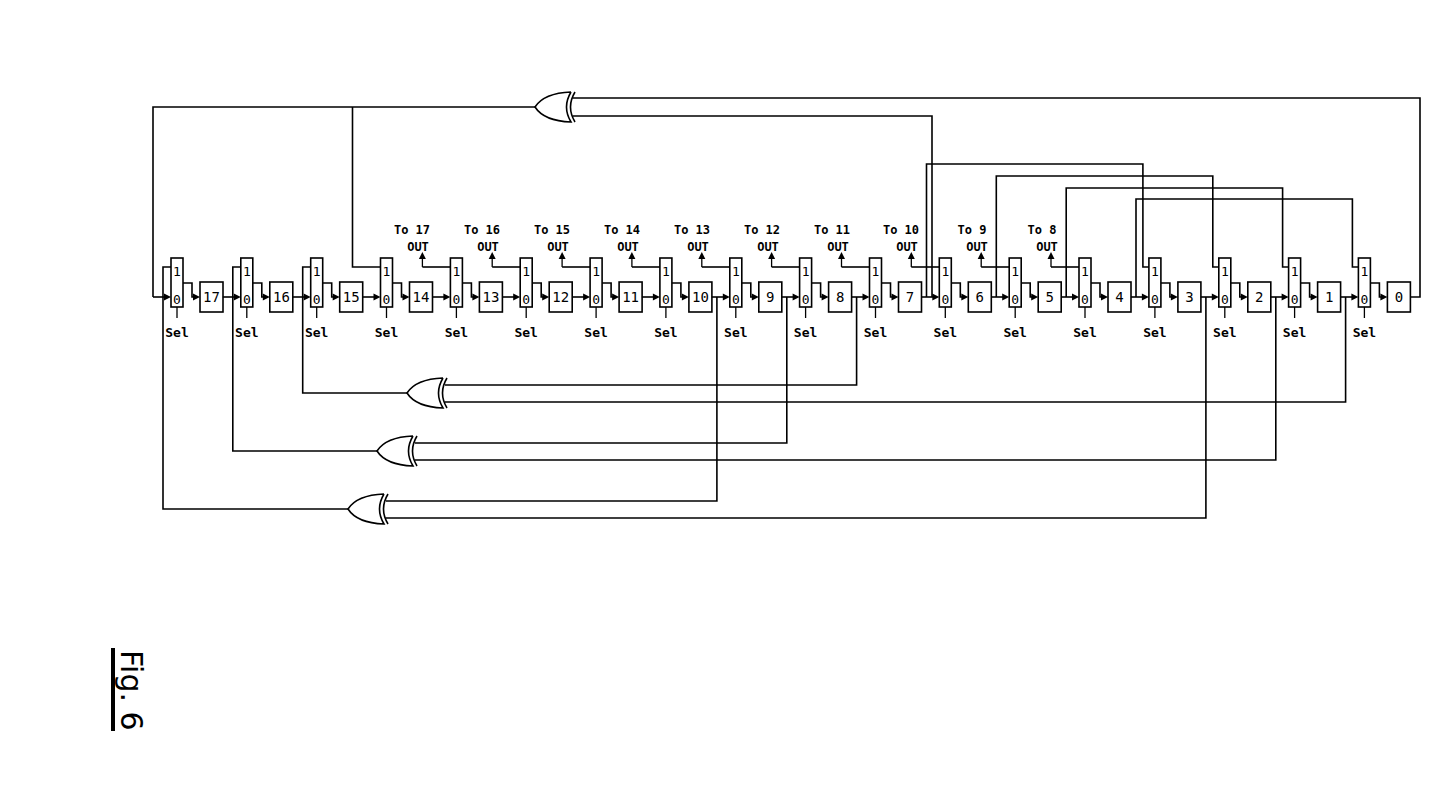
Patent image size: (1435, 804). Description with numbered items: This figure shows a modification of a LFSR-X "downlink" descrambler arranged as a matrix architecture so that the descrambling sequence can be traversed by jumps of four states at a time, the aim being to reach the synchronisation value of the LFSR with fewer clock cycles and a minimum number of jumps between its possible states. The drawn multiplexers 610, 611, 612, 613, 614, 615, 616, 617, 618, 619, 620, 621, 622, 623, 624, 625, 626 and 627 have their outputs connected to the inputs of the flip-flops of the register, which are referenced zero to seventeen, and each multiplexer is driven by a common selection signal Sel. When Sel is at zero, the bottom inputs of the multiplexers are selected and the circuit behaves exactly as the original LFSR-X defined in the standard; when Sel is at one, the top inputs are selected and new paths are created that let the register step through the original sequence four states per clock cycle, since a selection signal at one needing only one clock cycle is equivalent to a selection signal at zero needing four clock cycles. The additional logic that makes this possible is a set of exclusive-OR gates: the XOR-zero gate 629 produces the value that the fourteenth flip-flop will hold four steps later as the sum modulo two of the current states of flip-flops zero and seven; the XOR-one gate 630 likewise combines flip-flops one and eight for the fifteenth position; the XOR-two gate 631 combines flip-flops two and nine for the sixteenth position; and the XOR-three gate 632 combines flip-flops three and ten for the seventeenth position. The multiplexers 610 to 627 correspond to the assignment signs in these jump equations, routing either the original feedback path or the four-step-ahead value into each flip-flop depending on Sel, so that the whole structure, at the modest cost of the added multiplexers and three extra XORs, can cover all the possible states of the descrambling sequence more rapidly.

The multiplexer 610 is at (177, 258).
The multiplexer 611 is at (247, 258).
The multiplexer 612 is at (317, 258).
The multiplexer 613 is at (386, 258).
The multiplexer 614 is at (456, 258).
The multiplexer 615 is at (526, 258).
The multiplexer 616 is at (596, 258).
The multiplexer 617 is at (666, 258).
The multiplexer 618 is at (736, 258).
The multiplexer 619 is at (806, 258).
The multiplexer 620 is at (876, 258).
The multiplexer 621 is at (945, 258).
The multiplexer 622 is at (1015, 258).
The multiplexer 623 is at (1085, 258).
The multiplexer 624 is at (1155, 258).
The multiplexer 625 is at (1225, 258).
The multiplexer 626 is at (1295, 258).
The multiplexer 627 is at (1364, 258).
The XOR-0 629 is at (550, 93).
The XOR-1 630 is at (412, 408).
The XOR-2 631 is at (382, 466).
The XOR-3 632 is at (353, 524).